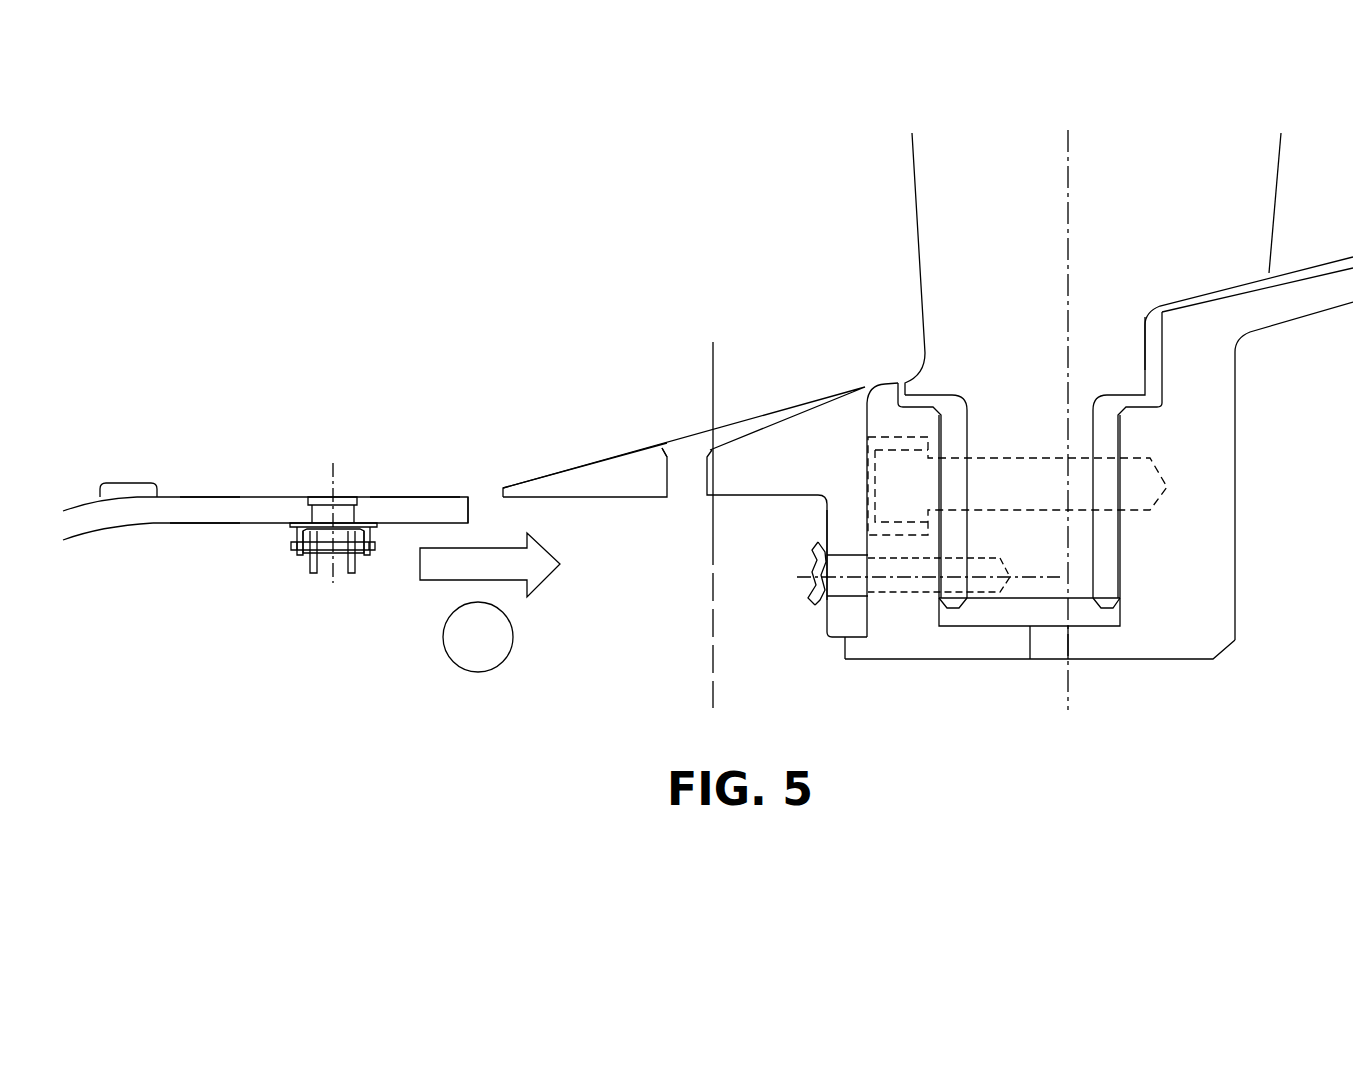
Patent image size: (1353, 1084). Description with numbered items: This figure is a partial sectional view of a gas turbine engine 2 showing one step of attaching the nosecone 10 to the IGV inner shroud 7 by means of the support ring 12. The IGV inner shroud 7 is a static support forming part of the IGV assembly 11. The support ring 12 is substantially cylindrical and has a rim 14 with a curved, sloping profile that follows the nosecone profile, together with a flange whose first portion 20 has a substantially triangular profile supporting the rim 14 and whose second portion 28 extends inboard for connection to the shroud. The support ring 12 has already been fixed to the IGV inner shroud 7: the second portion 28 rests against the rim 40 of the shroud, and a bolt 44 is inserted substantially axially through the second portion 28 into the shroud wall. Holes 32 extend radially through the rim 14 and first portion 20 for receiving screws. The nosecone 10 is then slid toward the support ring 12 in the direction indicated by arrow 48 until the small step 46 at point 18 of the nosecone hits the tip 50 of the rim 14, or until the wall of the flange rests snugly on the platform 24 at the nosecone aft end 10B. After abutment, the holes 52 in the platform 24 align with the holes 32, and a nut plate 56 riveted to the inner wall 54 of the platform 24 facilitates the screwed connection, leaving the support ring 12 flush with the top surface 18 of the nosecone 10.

The gas turbine engine 2 is at (478, 637).
The IGV inner shroud 7 is at (1210, 498).
The nosecone 10 is at (248, 512).
The nosecone aft end 10B is at (468, 508).
The IGV assembly 11 is at (1162, 660).
The support ring 12 is at (763, 378).
The rim 14 is at (673, 438).
The top surface 18 is at (220, 495).
The first portion 20 is at (757, 468).
The platform 24 is at (377, 512).
The second portion 28 is at (837, 510).
The holes 32 is at (668, 475).
The rim 40 is at (847, 642).
The bolt 44 is at (813, 573).
The step 46 is at (128, 481).
The arrow 48 is at (537, 565).
The tip 50 is at (503, 487).
The holes 52 is at (325, 493).
The inner wall 54 is at (197, 527).
The nut plate 56 is at (288, 532).